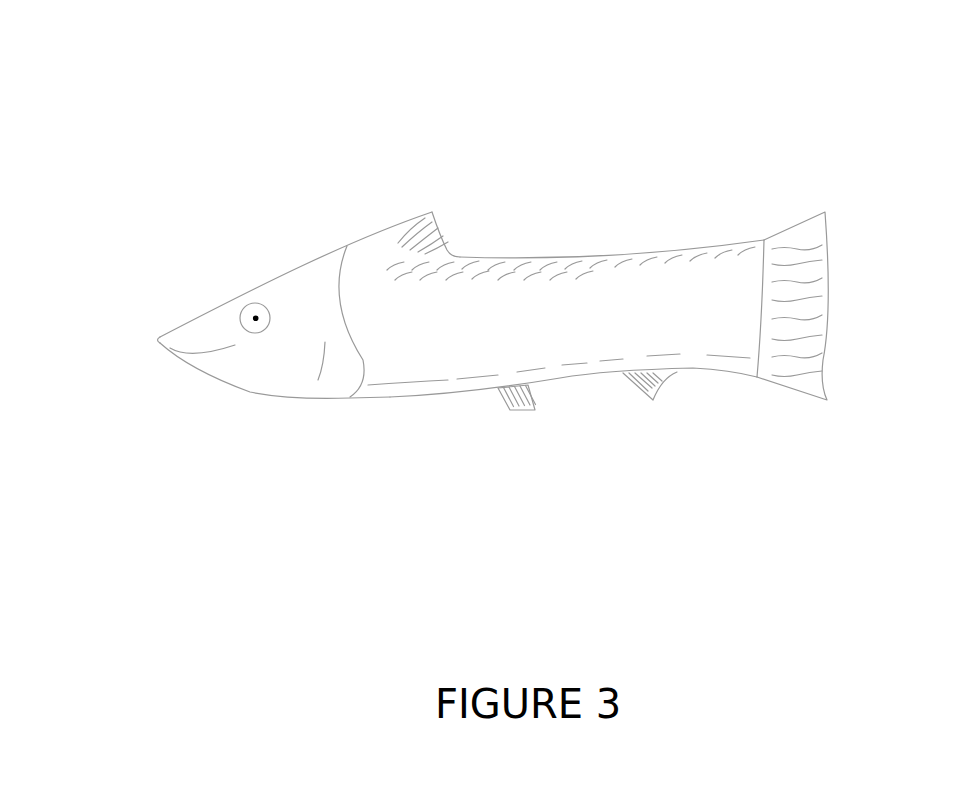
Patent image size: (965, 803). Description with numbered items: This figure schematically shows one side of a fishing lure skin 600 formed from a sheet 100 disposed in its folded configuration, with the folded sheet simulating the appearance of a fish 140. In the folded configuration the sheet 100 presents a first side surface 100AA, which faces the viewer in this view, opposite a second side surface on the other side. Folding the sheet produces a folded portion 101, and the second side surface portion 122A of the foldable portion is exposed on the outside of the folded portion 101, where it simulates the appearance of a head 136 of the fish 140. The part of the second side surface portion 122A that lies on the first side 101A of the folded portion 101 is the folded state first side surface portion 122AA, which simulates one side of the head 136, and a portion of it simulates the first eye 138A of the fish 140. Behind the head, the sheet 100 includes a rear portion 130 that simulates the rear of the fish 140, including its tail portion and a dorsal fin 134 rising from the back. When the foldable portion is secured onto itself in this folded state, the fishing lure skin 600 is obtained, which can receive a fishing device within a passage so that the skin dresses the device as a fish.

The fishing lure skin 600 is at (826, 129).
The sheet 100 is at (633, 144).
The first side surface 100AA is at (566, 326).
The folded portion 101 is at (285, 240).
The first side of the folded portion 101A is at (248, 292).
The folded state first side surface portion 122AA is at (322, 273).
The second side surface portion 122A is at (295, 385).
The rear portion 130 is at (843, 422).
The dorsal fin 134 is at (432, 212).
The head 136 is at (198, 304).
The first eye 138A is at (255, 333).
The fish 140 is at (174, 425).